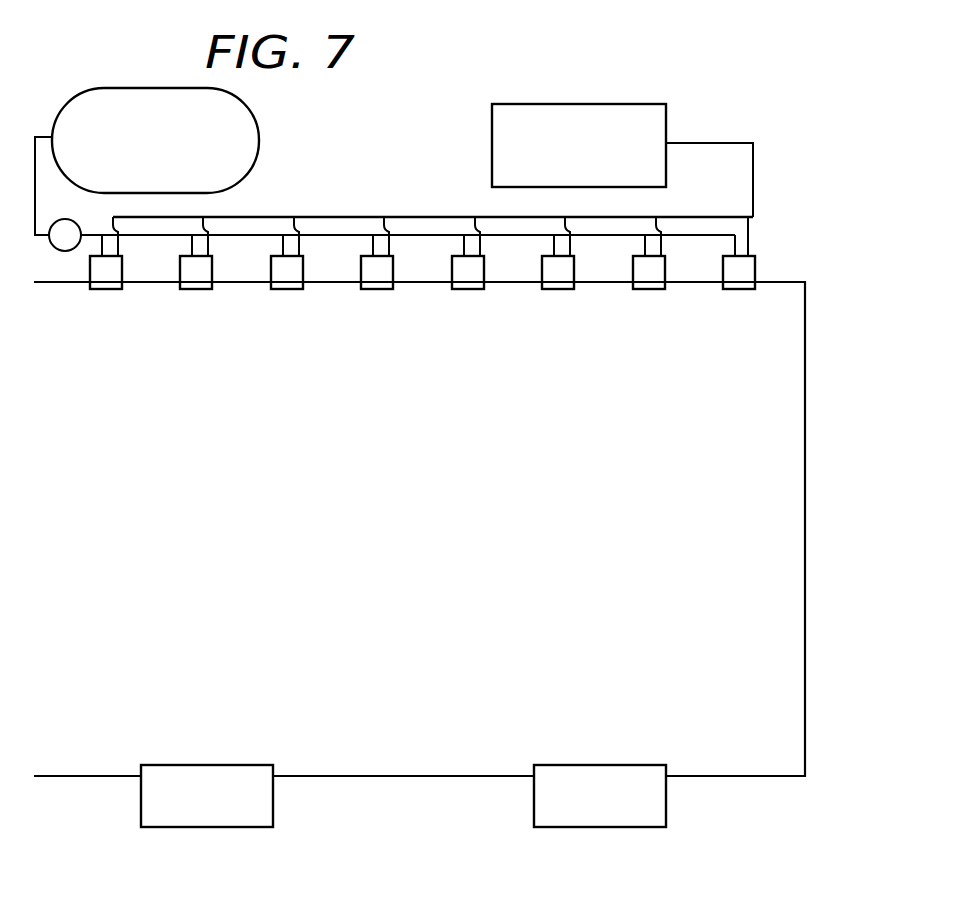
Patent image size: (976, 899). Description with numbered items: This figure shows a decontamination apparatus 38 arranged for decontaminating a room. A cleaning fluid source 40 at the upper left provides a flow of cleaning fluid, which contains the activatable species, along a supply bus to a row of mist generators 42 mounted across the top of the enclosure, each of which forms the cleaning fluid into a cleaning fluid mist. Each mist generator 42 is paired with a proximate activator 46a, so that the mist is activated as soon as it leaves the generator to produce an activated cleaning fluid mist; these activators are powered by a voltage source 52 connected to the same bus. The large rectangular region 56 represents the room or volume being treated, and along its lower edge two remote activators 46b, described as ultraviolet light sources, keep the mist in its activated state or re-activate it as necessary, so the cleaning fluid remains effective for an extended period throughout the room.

The decontamination apparatus 38 is at (335, 102).
The cleaning fluid source 40 is at (259, 141).
The voltage source 52 is at (625, 104).
The mist generator 42 is at (422, 277).
The activator 46a is at (122, 270).
The activator 46b is at (273, 800).
The substrate / workpiece 56 is at (34, 514).